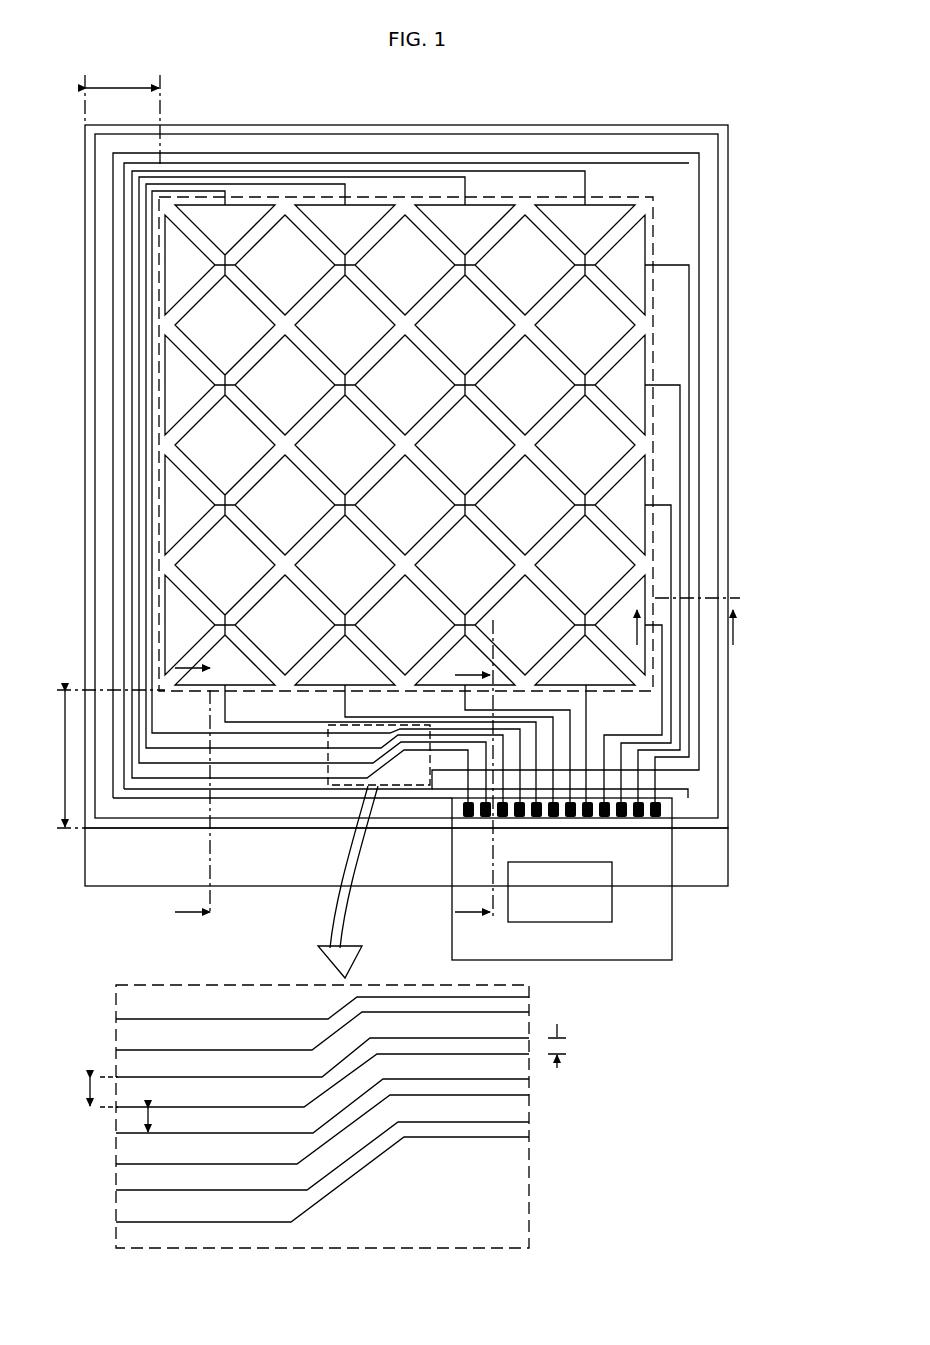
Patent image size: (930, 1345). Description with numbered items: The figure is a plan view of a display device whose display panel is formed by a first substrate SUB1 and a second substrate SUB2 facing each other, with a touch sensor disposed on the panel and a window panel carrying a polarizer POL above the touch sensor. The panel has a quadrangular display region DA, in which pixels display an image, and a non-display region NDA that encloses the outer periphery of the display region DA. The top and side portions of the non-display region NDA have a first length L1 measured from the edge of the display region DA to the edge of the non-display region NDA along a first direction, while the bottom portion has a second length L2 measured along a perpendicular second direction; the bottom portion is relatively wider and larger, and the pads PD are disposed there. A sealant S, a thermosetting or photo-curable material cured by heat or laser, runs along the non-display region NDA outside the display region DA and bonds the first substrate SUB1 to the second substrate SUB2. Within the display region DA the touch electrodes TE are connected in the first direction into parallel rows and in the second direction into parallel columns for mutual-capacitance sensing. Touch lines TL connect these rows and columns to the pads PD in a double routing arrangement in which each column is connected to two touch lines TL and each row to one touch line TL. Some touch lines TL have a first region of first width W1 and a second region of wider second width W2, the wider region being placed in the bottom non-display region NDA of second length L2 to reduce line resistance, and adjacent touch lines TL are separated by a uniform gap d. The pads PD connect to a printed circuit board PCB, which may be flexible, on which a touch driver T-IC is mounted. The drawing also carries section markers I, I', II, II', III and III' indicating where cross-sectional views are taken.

The touch electrode TE is at (642, 240).
The second substrate SUB2 is at (728, 183).
The touch line TL is at (683, 288).
The display region DA is at (655, 350).
The non-display region NDA is at (725, 408).
The sealant S is at (714, 468).
The polarizer POL is at (706, 545).
The pad PD is at (660, 808).
The first substrate SUB1 is at (728, 860).
The printed circuit board PCB is at (672, 930).
The touch driver T-IC is at (585, 922).
The first length L1 is at (122, 109).
The second length L2 is at (98, 759).
The first width W1 is at (571, 1046).
The second width W2 is at (88, 1092).
The gap d is at (142, 1130).
The section line I is at (474, 770).
The section line I' is at (472, 929).
The section line II is at (188, 776).
The section line II' is at (190, 927).
The section line III is at (675, 623).
The section line III' is at (750, 629).